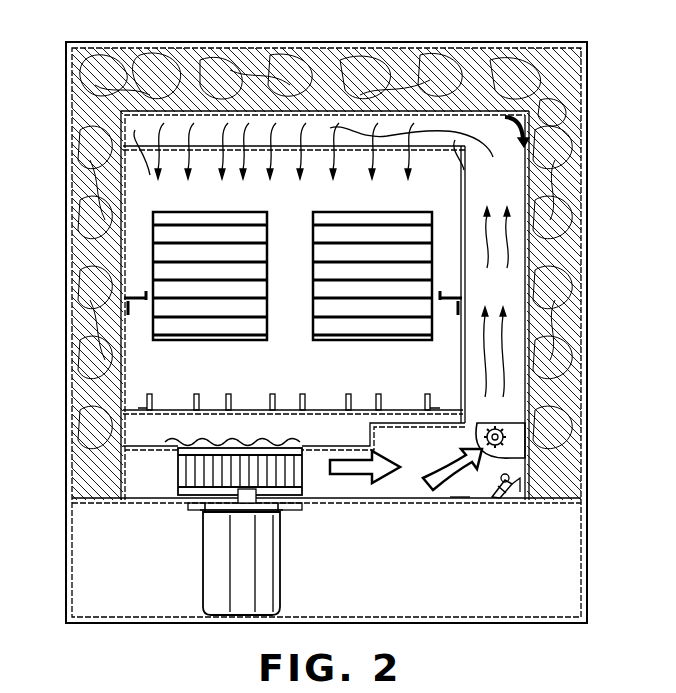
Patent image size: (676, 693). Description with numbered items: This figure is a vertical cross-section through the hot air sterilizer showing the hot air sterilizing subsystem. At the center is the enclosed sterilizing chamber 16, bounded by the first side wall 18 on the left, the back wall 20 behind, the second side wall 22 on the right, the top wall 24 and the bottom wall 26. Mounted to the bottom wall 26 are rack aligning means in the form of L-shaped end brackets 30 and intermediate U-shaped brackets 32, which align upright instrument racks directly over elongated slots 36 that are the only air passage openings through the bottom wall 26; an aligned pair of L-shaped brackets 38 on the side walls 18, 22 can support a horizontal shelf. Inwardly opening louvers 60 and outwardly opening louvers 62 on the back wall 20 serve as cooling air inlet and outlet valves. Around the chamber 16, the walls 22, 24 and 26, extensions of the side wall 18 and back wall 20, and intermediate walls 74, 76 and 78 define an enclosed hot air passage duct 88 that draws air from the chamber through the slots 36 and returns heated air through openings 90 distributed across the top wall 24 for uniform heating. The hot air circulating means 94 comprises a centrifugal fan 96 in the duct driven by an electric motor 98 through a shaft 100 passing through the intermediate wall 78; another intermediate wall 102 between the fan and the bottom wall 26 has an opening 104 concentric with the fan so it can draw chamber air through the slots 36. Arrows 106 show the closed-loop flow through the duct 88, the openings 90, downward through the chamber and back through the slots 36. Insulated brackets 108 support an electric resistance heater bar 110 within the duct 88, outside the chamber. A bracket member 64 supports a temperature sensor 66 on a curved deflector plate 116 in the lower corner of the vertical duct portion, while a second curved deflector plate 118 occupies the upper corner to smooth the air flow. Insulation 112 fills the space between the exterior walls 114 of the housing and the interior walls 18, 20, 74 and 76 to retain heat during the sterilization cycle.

The sterilizing chamber 16 is at (418, 188).
The first side wall 18 is at (118, 261).
The back wall 20 is at (355, 192).
The second side wall 22 is at (467, 283).
The top wall 24 is at (141, 146).
The bottom wall 26 is at (145, 414).
The L-shaped end brackets 30 is at (150, 393).
The U-shaped brackets 32 is at (228, 394).
The openings 36 is at (175, 420).
The L-shaped brackets 38 is at (138, 295).
The inwardly opening louvers 60 is at (235, 222).
The outwardly opening louvers 62 is at (372, 222).
The bracket member 64 is at (503, 491).
The temperature sensor 66 is at (501, 478).
The intermediate wall 74 is at (128, 112).
The intermediate wall 76 is at (530, 318).
The intermediate wall 78 is at (460, 496).
The hot air passage duct 88 is at (498, 198).
The openings 90 is at (290, 146).
The hot air circulating means 94 is at (200, 518).
The centrifugal fan 96 is at (200, 473).
The electric motor 98 is at (275, 555).
The shaft 100 is at (257, 510).
The intermediate wall 102 is at (437, 430).
The opening 104 is at (202, 510).
The arrows 106 is at (450, 128).
The insulated brackets 108 is at (527, 423).
The heater bar 110 is at (505, 447).
The insulation 112 is at (560, 122).
The exterior walls 114 is at (402, 43).
The curved deflector plate 116 is at (517, 498).
The curved deflector plate 118 is at (578, 70).